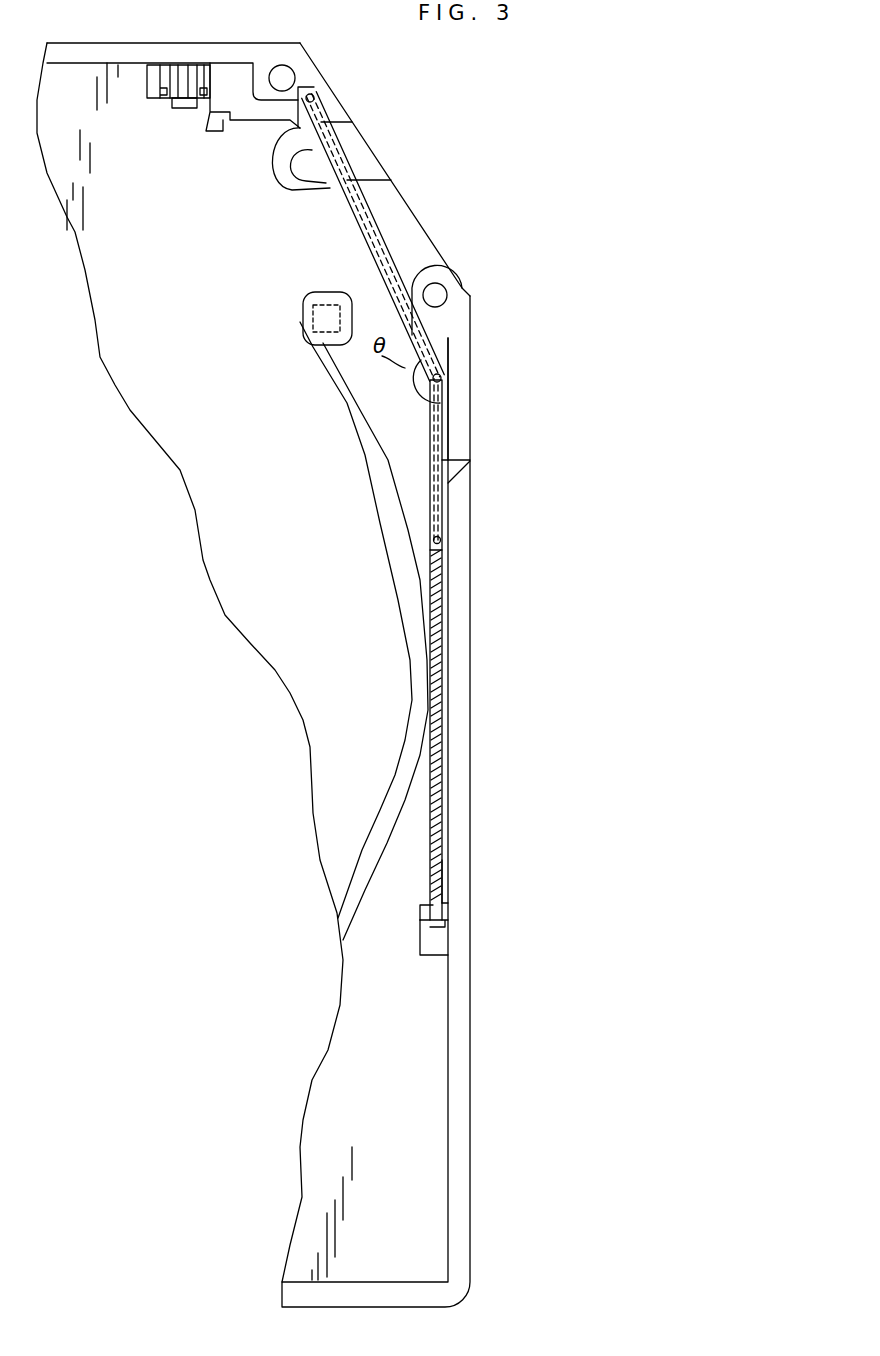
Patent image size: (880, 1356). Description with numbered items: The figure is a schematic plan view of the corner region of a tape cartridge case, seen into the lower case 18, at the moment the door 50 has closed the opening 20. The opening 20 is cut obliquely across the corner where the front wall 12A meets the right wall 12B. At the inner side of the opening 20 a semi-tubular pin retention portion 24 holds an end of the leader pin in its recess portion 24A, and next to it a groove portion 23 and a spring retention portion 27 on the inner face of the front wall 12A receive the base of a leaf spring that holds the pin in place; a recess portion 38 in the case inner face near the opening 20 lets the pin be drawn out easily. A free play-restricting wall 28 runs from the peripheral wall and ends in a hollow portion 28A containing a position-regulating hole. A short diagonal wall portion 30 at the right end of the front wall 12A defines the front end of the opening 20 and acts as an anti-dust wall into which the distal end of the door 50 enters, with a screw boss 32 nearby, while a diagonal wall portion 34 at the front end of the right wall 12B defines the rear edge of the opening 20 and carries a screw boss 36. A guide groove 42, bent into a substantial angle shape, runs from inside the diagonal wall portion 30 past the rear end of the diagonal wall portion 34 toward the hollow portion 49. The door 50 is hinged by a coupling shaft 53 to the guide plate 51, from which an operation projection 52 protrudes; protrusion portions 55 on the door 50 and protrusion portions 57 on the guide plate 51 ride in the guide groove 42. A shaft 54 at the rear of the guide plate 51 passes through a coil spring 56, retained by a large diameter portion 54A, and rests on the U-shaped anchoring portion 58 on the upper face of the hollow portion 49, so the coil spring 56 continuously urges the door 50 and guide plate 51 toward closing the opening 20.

The front wall 12A is at (80, 43).
The right wall 12B is at (473, 1140).
The lower case 18 is at (95, 364).
The opening 20 is at (422, 205).
The groove portion 23 is at (224, 103).
The pin retention portion 24 is at (275, 160).
The recess portion 24A is at (297, 155).
The spring retention portion 27 is at (205, 95).
The free play-restricting wall 28 is at (333, 384).
The hollow portion 28A is at (308, 300).
The diagonal wall portion 30 is at (323, 83).
The screw boss 32 is at (283, 77).
The diagonal wall portion 34 is at (446, 340).
The screw boss 36 is at (438, 295).
The recess portion 38 is at (362, 152).
The guide groove 42 is at (396, 268).
The hollow portion 49 is at (430, 950).
The door 50 is at (372, 195).
The guide plate 51 is at (430, 462).
The operation projection 52 is at (462, 458).
The coupling shaft 53 is at (447, 378).
The shaft 54 is at (440, 863).
The large diameter portion 54A is at (443, 926).
The protrusion portion 55 is at (316, 99).
The coil spring 56 is at (442, 883).
The protrusion portion 57 is at (442, 540).
The anchoring portion 58 is at (421, 908).